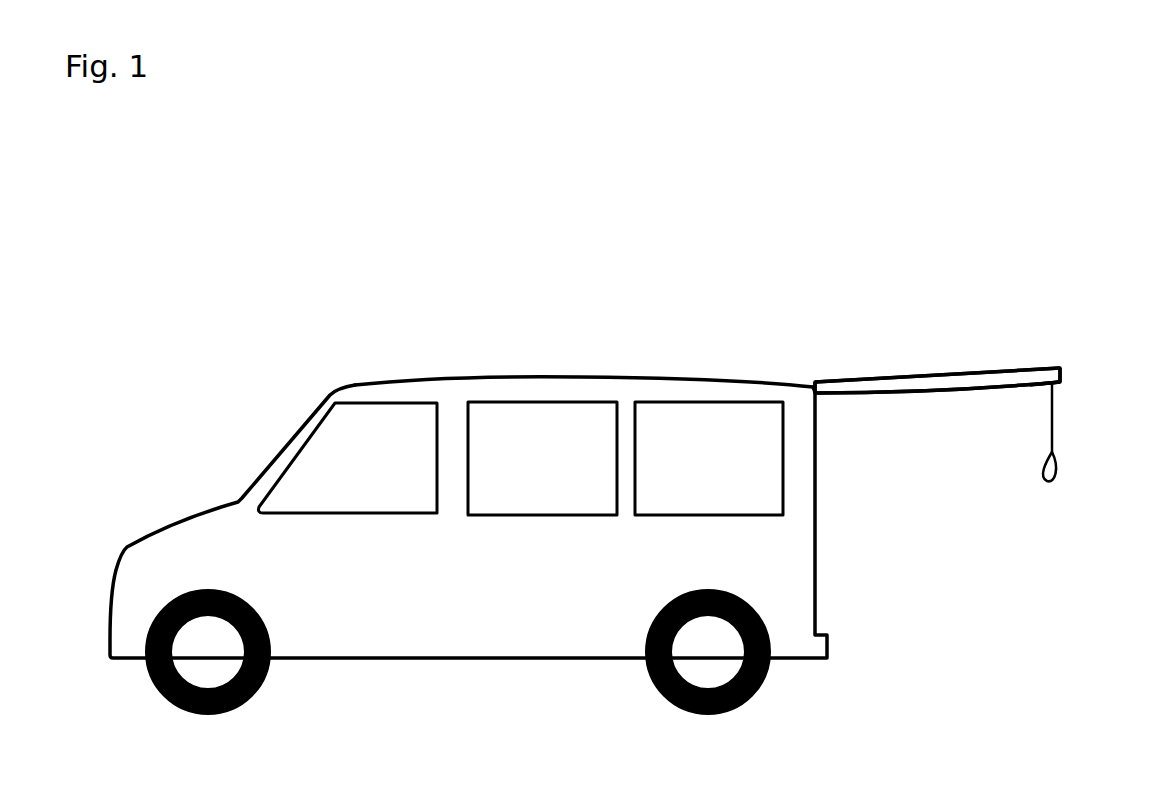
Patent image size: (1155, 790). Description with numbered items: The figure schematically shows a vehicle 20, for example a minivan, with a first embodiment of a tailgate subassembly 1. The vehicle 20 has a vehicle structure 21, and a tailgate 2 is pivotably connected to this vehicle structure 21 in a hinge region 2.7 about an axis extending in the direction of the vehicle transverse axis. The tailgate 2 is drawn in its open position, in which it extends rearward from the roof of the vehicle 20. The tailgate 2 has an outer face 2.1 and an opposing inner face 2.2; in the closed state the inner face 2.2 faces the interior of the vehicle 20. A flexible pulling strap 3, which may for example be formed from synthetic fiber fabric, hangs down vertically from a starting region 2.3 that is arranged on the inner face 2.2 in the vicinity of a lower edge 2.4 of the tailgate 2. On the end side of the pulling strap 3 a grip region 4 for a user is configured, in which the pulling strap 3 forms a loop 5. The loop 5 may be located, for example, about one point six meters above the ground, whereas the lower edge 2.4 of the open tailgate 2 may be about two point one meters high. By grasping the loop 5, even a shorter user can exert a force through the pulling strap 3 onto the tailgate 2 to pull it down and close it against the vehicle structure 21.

The tailgate subassembly 1 is at (952, 392).
The tailgate 2 is at (948, 389).
The outer face 2.1 is at (927, 365).
The inner face 2.2 is at (948, 405).
The starting region 2.3 is at (1043, 388).
The lower edge 2.4 is at (1064, 375).
The hinge region 2.7 is at (806, 384).
The pulling strap 3 is at (1080, 482).
The grip region 4 is at (1037, 517).
The loop 5 is at (1038, 480).
The vehicle 20 is at (468, 432).
The vehicle structure 21 is at (660, 377).